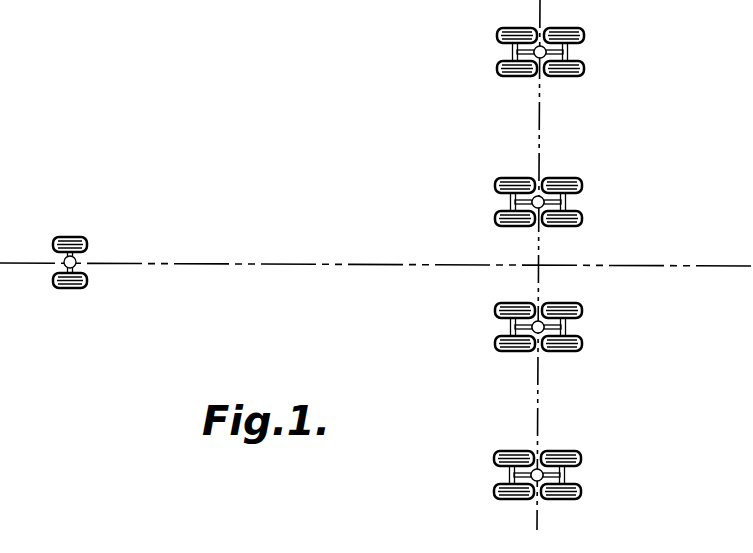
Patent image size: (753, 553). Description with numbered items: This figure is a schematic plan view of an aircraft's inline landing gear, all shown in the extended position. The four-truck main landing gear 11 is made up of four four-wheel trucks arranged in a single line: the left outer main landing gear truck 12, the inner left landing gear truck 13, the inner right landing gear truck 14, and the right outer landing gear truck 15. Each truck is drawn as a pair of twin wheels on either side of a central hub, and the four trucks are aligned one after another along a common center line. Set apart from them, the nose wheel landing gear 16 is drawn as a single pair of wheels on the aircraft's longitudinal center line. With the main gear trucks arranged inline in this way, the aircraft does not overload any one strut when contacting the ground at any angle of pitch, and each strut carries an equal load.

The four-truck main landing gear 11 is at (632, 62).
The left outer main landing gear truck 12 is at (581, 457).
The inner left landing gear truck 13 is at (582, 309).
The inner right landing gear truck 14 is at (582, 187).
The right outer landing gear truck 15 is at (583, 34).
The nose wheel landing gear 16 is at (85, 240).